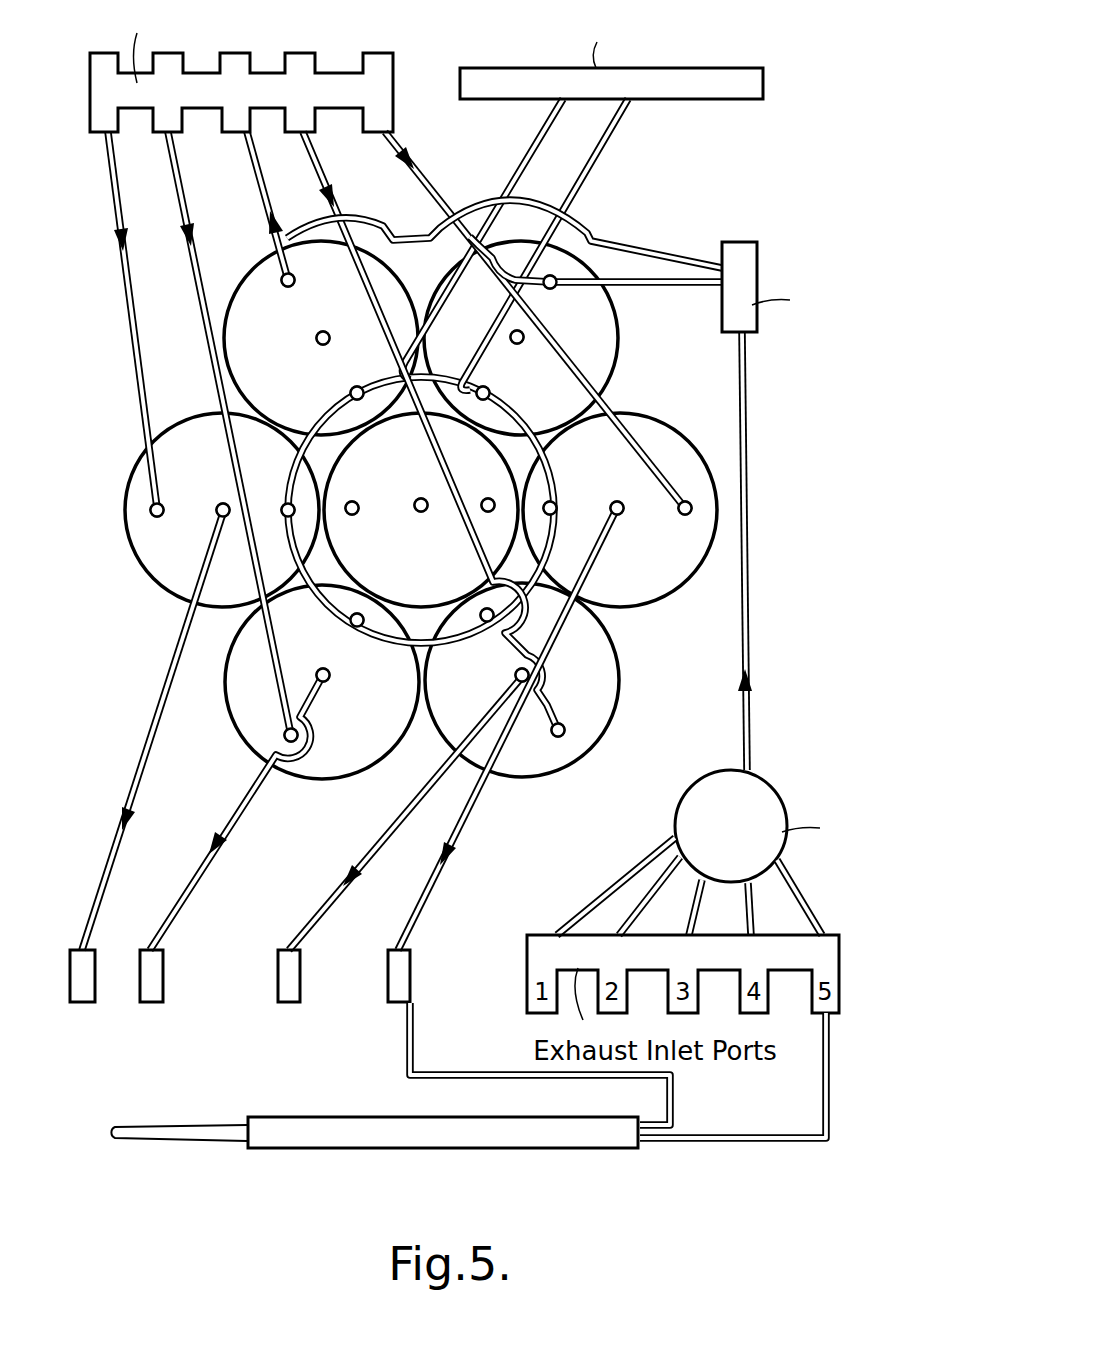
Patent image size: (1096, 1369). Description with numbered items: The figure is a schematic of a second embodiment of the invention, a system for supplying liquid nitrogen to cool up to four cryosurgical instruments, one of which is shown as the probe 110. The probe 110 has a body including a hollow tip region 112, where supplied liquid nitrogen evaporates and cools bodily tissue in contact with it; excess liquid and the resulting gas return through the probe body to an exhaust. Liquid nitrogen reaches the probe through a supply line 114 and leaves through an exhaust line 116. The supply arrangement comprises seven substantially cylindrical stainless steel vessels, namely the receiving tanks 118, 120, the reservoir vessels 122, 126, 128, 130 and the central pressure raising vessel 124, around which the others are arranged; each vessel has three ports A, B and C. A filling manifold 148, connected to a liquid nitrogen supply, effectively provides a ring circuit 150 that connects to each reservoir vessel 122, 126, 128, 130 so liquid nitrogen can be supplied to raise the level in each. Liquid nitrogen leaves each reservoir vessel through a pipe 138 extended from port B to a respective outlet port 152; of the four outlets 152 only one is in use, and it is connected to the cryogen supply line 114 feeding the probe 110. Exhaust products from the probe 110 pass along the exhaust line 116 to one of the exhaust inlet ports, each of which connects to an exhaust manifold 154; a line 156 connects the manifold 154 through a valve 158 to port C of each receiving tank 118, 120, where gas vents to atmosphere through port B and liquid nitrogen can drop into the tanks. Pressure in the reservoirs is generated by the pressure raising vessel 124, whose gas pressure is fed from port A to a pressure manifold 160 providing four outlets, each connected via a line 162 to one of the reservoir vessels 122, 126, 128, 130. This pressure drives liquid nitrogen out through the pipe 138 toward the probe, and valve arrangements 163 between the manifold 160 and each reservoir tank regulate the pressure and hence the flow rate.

The probe 110 is at (493, 1155).
The hollow tip region 112 is at (112, 1135).
The supply line 114 is at (498, 1065).
The exhaust line 116 is at (775, 1140).
The vessel 118 is at (247, 273).
The vessel 120 is at (612, 340).
The reservoir vessel 122 is at (148, 560).
The pressure raising vessel 124 is at (343, 455).
The reservoir vessel 126 is at (675, 428).
The reservoir vessel 128 is at (240, 718).
The reservoir vessel 130 is at (618, 692).
The pipe 138 is at (130, 758).
The filling manifold 148 is at (730, 92).
The ring circuit 150 is at (597, 158).
The outlet port 152 is at (152, 1003).
The exhaust manifold 154 is at (780, 808).
The line 156 is at (647, 277).
The valve 158 is at (760, 262).
The pressure manifold 160 is at (395, 63).
The line 162 is at (130, 320).
The valve arrangement 163 is at (117, 135).